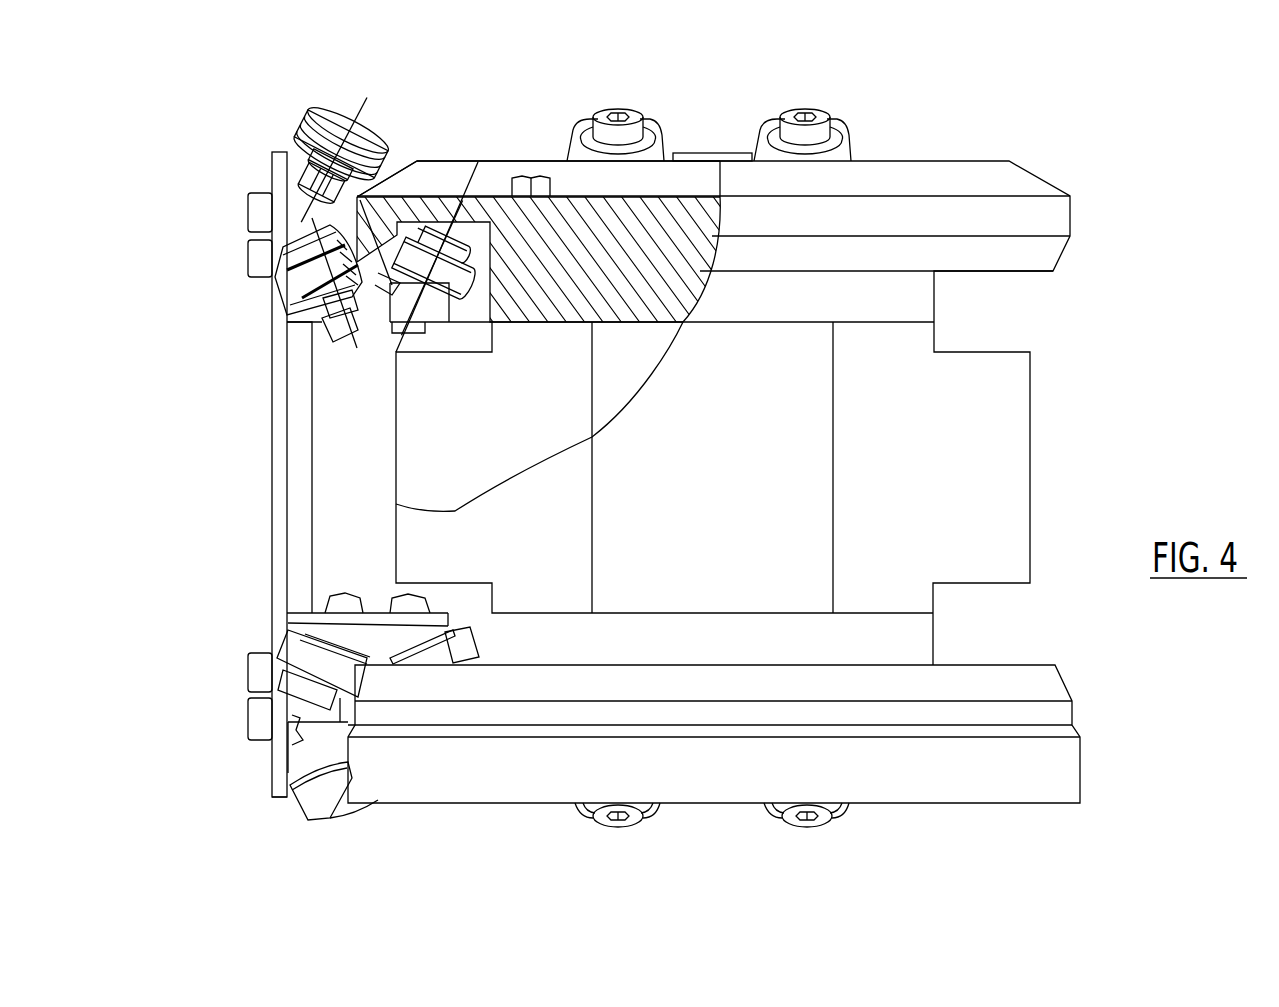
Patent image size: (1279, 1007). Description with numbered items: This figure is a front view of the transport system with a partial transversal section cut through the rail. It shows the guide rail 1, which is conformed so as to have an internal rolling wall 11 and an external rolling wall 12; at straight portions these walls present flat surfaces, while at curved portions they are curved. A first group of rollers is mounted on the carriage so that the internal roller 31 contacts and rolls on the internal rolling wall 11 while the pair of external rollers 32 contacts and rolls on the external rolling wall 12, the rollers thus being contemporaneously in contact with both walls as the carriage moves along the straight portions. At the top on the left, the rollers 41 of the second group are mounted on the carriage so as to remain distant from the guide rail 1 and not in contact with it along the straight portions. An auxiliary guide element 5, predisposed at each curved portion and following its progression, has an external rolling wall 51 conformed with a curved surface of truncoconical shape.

The guide rail 1 is at (377, 320).
The internal rolling wall 11 is at (427, 190).
The auxiliary guide element 5 is at (447, 167).
The external rolling wall 51 is at (403, 158).
The external rolling wall 12 is at (333, 320).
The internal roller 31 is at (468, 297).
The external rollers 32 is at (278, 288).
The rollers 41 is at (307, 130).